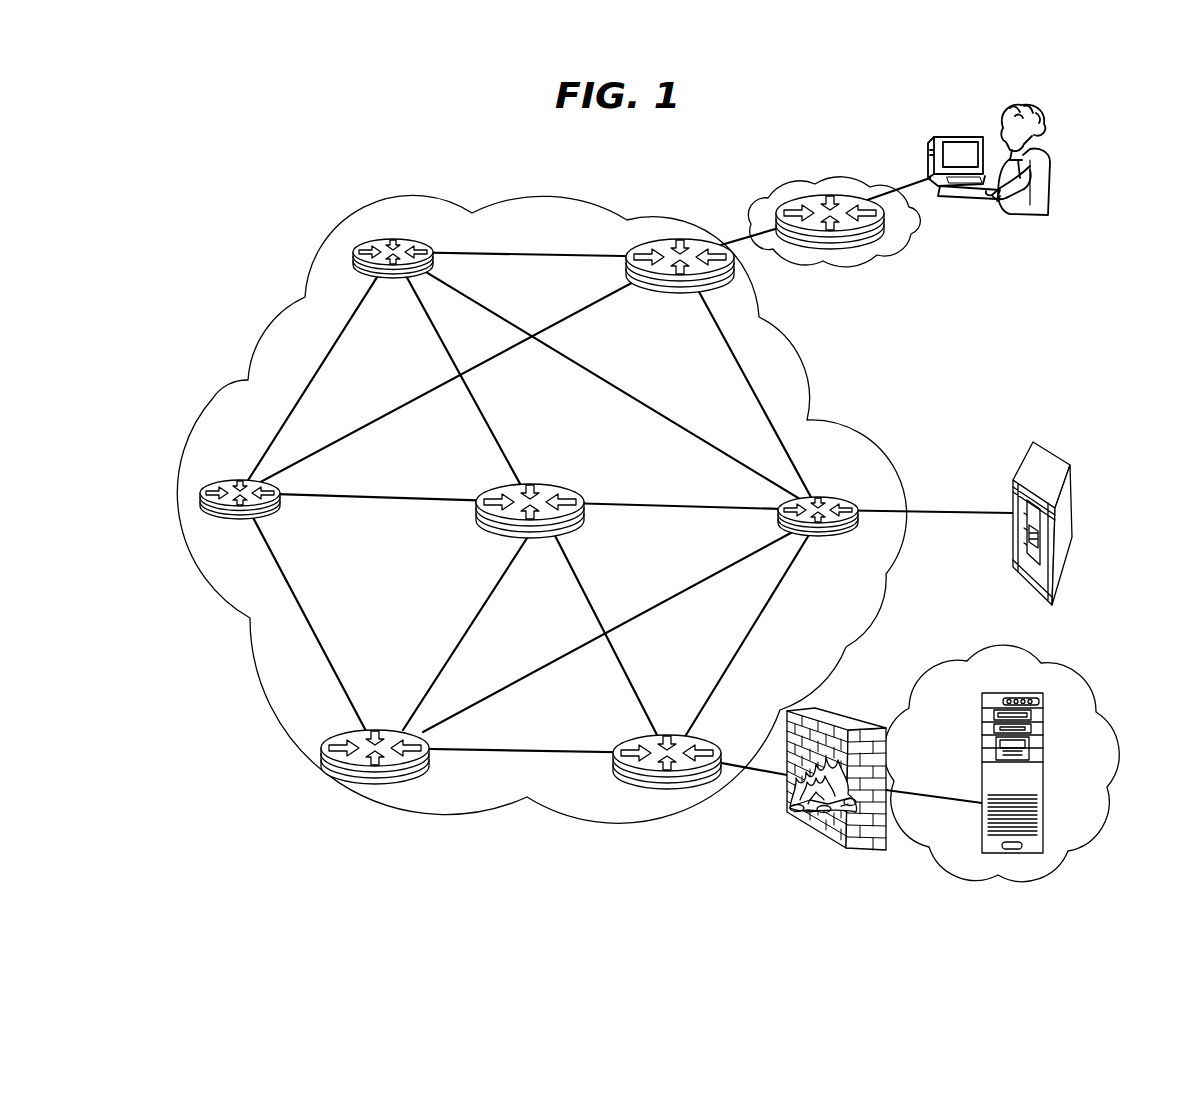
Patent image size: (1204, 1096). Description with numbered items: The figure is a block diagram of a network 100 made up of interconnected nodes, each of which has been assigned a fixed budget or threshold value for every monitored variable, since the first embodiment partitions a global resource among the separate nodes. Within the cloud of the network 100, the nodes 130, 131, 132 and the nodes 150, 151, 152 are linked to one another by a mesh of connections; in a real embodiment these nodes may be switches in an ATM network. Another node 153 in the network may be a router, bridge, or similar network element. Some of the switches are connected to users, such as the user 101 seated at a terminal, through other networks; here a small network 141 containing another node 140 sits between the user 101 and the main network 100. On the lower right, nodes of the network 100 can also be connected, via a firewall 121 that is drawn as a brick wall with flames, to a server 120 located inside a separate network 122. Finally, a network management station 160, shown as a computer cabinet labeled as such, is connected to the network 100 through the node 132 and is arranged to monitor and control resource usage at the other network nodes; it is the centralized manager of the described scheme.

The network 100 is at (258, 334).
The user 101 is at (1040, 152).
The server 120 is at (1045, 756).
The firewall 121 is at (796, 815).
The network 122 is at (1080, 676).
The node 130 is at (407, 243).
The node 131 is at (226, 481).
The node 132 is at (844, 490).
The node 140 is at (819, 200).
The access network cloud 141 is at (905, 246).
The node 150 is at (732, 274).
The node 151 is at (552, 488).
The node 152 is at (397, 765).
The node 153 is at (643, 764).
The network management station 160 is at (1043, 473).